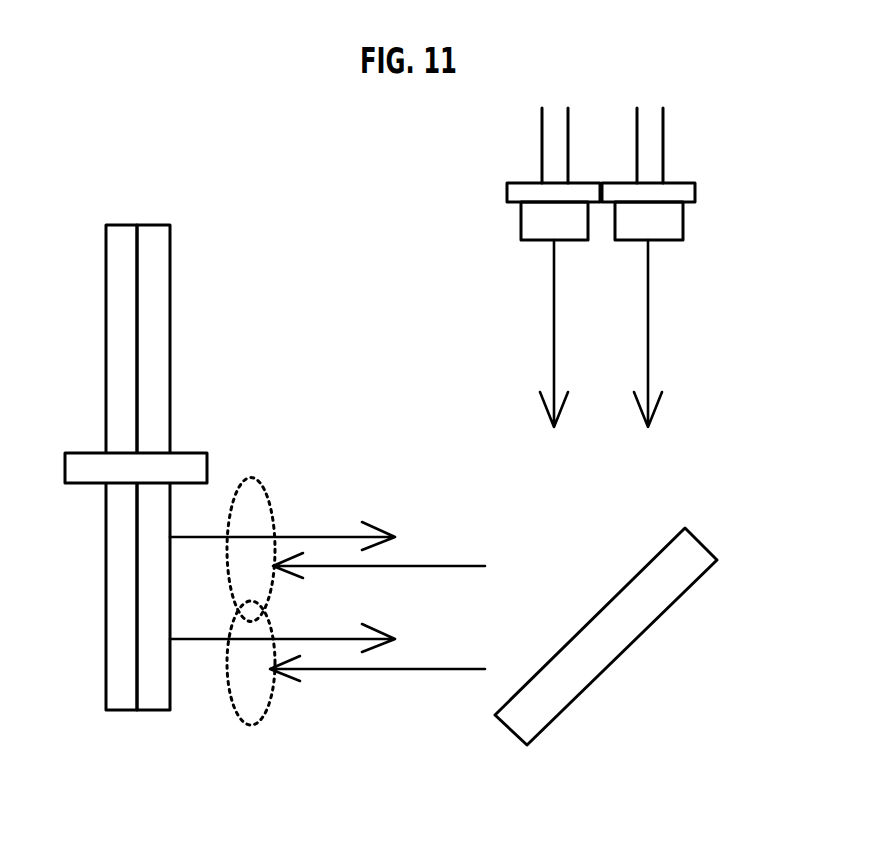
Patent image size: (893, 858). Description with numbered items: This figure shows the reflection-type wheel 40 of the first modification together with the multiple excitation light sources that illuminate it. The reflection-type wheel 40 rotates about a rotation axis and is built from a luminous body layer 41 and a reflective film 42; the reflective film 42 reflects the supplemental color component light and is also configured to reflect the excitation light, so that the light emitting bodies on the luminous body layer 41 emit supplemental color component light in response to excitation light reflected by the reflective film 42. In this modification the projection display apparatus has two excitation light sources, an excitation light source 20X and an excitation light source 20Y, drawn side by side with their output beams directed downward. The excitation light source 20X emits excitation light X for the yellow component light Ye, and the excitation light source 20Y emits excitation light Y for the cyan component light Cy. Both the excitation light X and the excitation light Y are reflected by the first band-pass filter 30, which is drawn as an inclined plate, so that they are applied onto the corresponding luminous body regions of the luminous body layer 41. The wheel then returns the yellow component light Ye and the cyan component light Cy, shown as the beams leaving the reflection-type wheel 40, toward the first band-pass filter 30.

The reflection-type wheel 40 is at (155, 418).
The luminous body layer 41 is at (155, 345).
The reflective film 42 is at (119, 348).
The first band-pass filter 30 is at (628, 643).
The excitation light source 20X is at (521, 225).
The excitation light source 20Y is at (683, 231).
The excitation light X is at (441, 670).
The excitation light Y is at (451, 565).
The yellow component light Ye is at (299, 536).
The cyan component light Cy is at (212, 644).